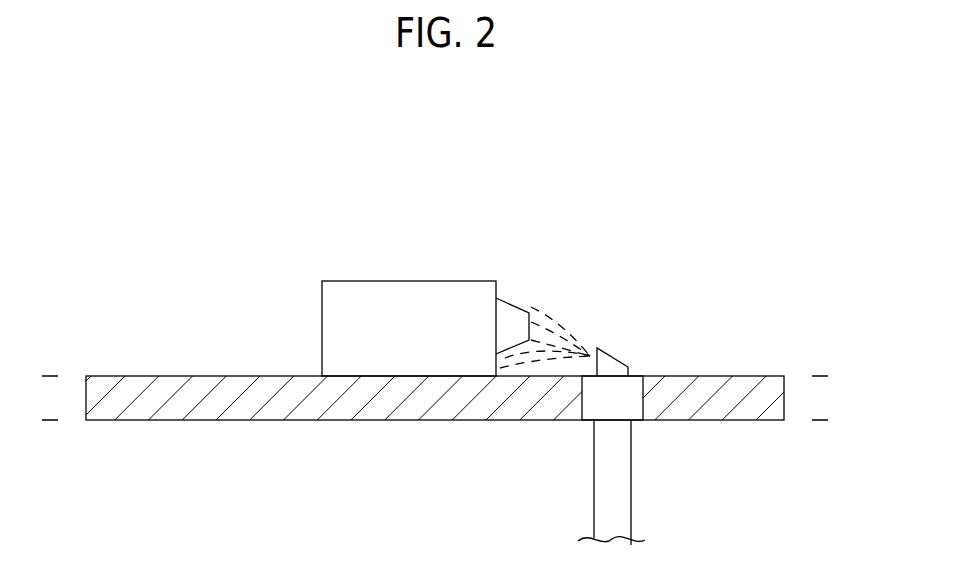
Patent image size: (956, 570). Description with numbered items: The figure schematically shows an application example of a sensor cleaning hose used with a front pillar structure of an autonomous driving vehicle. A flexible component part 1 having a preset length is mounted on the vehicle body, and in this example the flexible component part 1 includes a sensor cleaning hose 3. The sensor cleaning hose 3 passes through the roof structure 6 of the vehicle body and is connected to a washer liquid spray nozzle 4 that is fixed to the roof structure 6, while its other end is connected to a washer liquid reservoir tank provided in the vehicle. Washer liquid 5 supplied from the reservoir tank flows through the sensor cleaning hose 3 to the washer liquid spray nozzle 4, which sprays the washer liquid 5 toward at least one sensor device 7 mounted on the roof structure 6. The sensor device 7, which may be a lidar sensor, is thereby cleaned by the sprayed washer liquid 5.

The flexible component part 1 is at (585, 497).
The sensor cleaning hose 3 is at (618, 490).
The washer liquid spray nozzle 4 is at (643, 345).
The washer liquid 5 is at (566, 328).
The roof structure 6 is at (165, 376).
The sensor device 7 is at (447, 281).